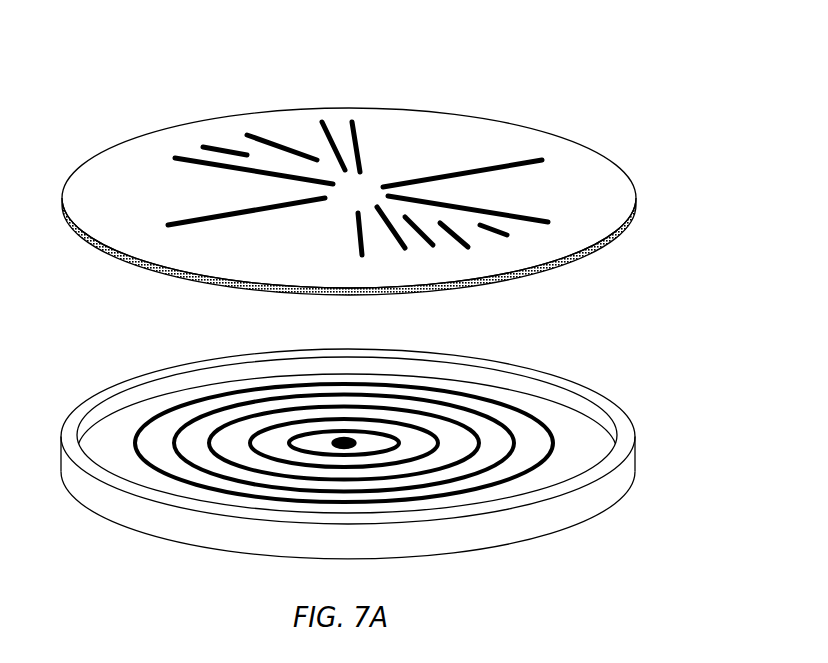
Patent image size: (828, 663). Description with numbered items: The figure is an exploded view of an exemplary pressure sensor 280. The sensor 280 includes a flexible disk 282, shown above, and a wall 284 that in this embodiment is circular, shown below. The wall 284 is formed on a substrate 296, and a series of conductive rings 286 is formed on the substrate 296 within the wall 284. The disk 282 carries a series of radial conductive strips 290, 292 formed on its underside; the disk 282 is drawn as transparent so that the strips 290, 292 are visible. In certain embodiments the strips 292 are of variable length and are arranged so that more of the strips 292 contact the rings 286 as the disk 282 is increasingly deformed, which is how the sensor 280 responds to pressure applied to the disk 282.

The pressure sensor 280 is at (110, 42).
The flexible disk 282 is at (393, 204).
The wall 284 is at (399, 452).
The conductive rings 286 is at (515, 438).
The radial conductive strips 290 is at (473, 168).
The radial conductive strips 292 is at (433, 245).
The substrate 296 is at (577, 438).